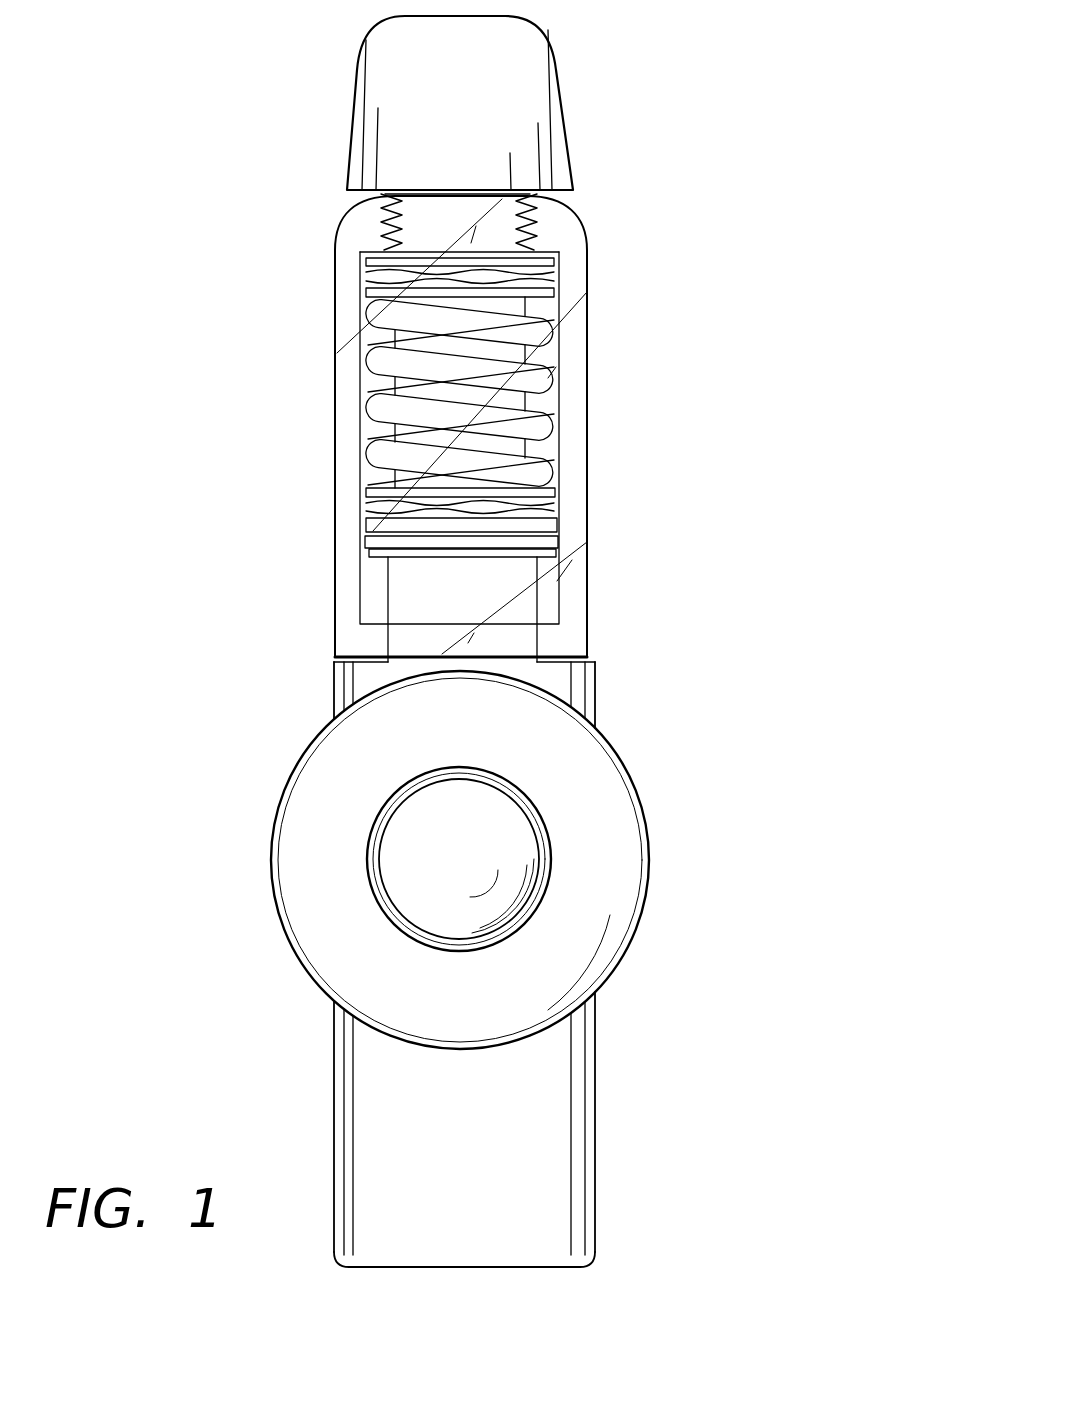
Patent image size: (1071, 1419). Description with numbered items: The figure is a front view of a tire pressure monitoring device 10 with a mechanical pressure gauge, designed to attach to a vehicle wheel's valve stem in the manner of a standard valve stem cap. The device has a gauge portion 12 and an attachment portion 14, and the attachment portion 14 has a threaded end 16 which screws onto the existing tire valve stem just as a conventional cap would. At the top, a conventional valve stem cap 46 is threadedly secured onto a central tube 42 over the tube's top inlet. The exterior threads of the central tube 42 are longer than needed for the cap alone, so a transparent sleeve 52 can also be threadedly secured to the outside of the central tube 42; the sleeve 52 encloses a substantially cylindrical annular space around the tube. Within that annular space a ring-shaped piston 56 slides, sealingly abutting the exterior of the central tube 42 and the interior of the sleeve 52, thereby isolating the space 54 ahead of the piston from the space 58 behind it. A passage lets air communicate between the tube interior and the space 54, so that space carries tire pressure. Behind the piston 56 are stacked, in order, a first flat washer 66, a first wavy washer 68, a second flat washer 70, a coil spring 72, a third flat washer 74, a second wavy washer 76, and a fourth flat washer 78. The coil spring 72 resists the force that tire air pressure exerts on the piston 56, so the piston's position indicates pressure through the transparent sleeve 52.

The pressure monitoring device 10 is at (752, 338).
The gauge portion 12 is at (650, 618).
The attachment portion 14 is at (654, 1069).
The threaded end 16 is at (598, 1268).
The central tube 42 is at (505, 352).
The valve stem cap 46 is at (550, 72).
The transparent sleeve 52 is at (577, 486).
The space ahead of the piston 54 is at (375, 585).
The ring-shaped piston 56 is at (553, 544).
The space behind the piston 58 is at (540, 400).
The first flat washer 66 is at (372, 528).
The first wavy washer 68 is at (366, 507).
The second flat washer 70 is at (366, 499).
The coil spring 72 is at (375, 363).
The third flat washer 74 is at (366, 291).
The second wavy washer 76 is at (366, 278).
The fourth flat washer 78 is at (366, 260).